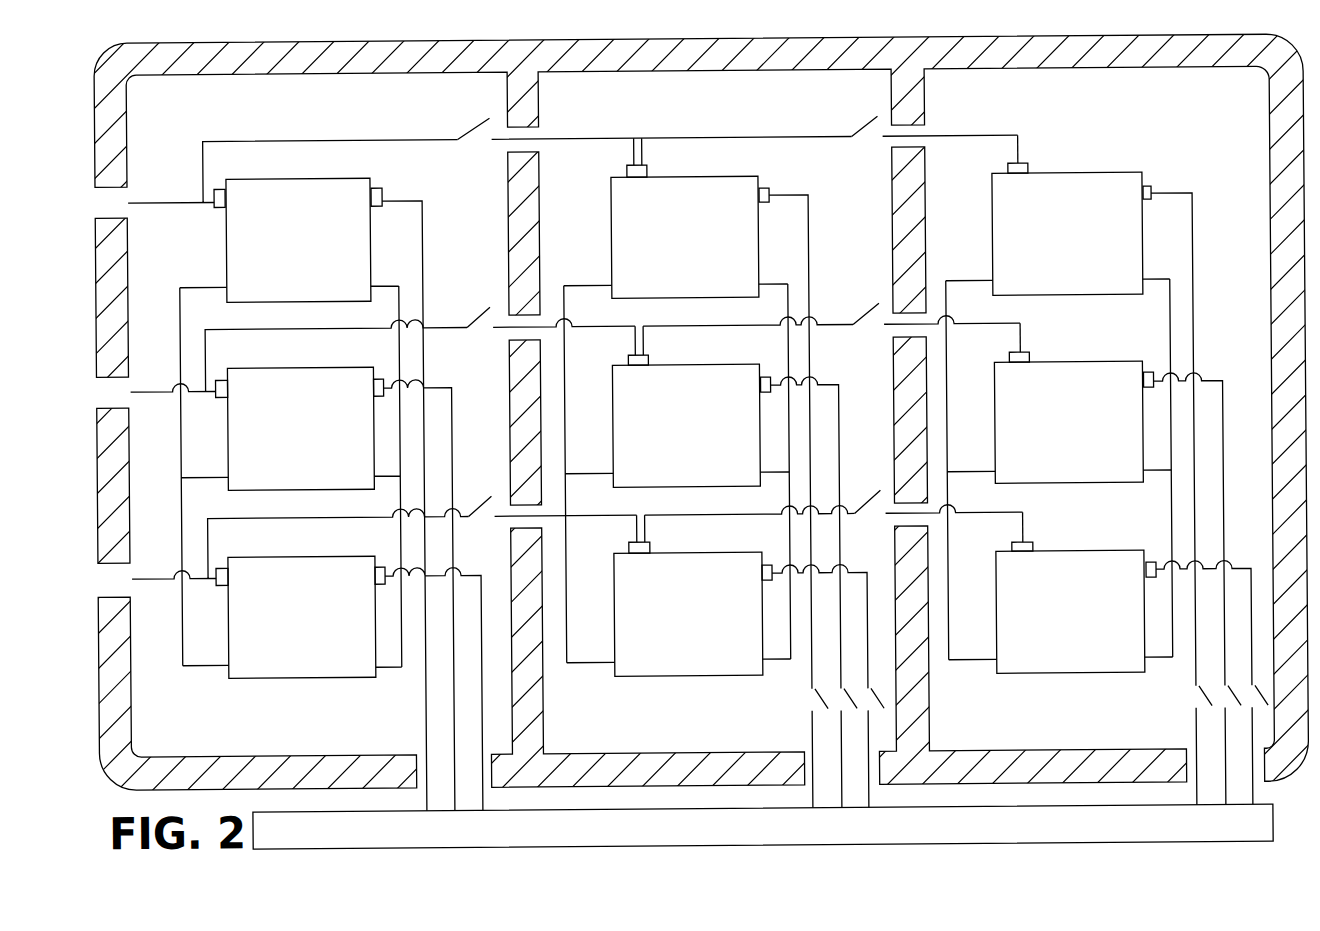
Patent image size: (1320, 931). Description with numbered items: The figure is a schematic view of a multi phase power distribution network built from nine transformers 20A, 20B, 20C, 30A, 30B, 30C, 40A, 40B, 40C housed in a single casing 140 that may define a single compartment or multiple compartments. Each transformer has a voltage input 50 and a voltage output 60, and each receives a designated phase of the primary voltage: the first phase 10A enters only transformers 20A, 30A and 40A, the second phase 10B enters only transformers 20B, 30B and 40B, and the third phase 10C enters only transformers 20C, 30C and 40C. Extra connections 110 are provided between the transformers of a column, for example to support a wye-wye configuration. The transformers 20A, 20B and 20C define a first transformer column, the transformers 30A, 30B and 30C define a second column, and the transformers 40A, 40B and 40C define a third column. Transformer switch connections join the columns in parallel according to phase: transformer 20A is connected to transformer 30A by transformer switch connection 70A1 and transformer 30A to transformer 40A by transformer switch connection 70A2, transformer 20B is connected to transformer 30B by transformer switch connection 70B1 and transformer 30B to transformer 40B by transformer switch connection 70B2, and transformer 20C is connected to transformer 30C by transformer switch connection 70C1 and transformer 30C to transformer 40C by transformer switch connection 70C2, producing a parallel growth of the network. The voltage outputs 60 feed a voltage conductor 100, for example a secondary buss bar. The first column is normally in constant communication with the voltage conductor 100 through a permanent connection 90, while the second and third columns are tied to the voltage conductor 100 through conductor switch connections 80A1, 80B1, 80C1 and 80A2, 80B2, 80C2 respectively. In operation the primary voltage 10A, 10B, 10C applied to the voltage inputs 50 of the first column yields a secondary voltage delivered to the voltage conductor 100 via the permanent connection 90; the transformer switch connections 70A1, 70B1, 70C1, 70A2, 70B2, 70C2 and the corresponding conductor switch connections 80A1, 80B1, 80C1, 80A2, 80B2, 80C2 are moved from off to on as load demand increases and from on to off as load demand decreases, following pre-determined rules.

The first phase 10A is at (155, 201).
The second phase 10B is at (140, 388).
The third phase 10C is at (140, 576).
The transformer 20A is at (272, 254).
The transformer 20B is at (273, 440).
The transformer 20C is at (273, 628).
The transformer 30A is at (659, 254).
The transformer 30B is at (660, 442).
The transformer 30C is at (660, 629).
The transformer 40A is at (1040, 252).
The transformer 40B is at (1041, 441).
The transformer 40C is at (1043, 629).
The voltage input 50 is at (218, 210).
The voltage output 60 is at (375, 190).
The transformer switch connection 70A1 is at (478, 126).
The transformer switch connection 70A2 is at (866, 120).
The transformer switch connection 70B1 is at (478, 318).
The transformer switch connection 70B2 is at (866, 316).
The transformer switch connection 70C1 is at (478, 507).
The transformer switch connection 70C2 is at (878, 493).
The conductor switch connection 80A1 is at (852, 223).
The conductor switch connection 80A2 is at (1238, 270).
The conductor switch connection 80B1 is at (837, 665).
The conductor switch connection 80B2 is at (1192, 665).
The conductor switch connection 80C1 is at (866, 677).
The conductor switch connection 80C2 is at (1223, 677).
The permanent connection 90 is at (424, 242).
The voltage conductor 100 is at (730, 841).
The extra connections 110 is at (205, 286).
The casing 140 is at (1150, 72).